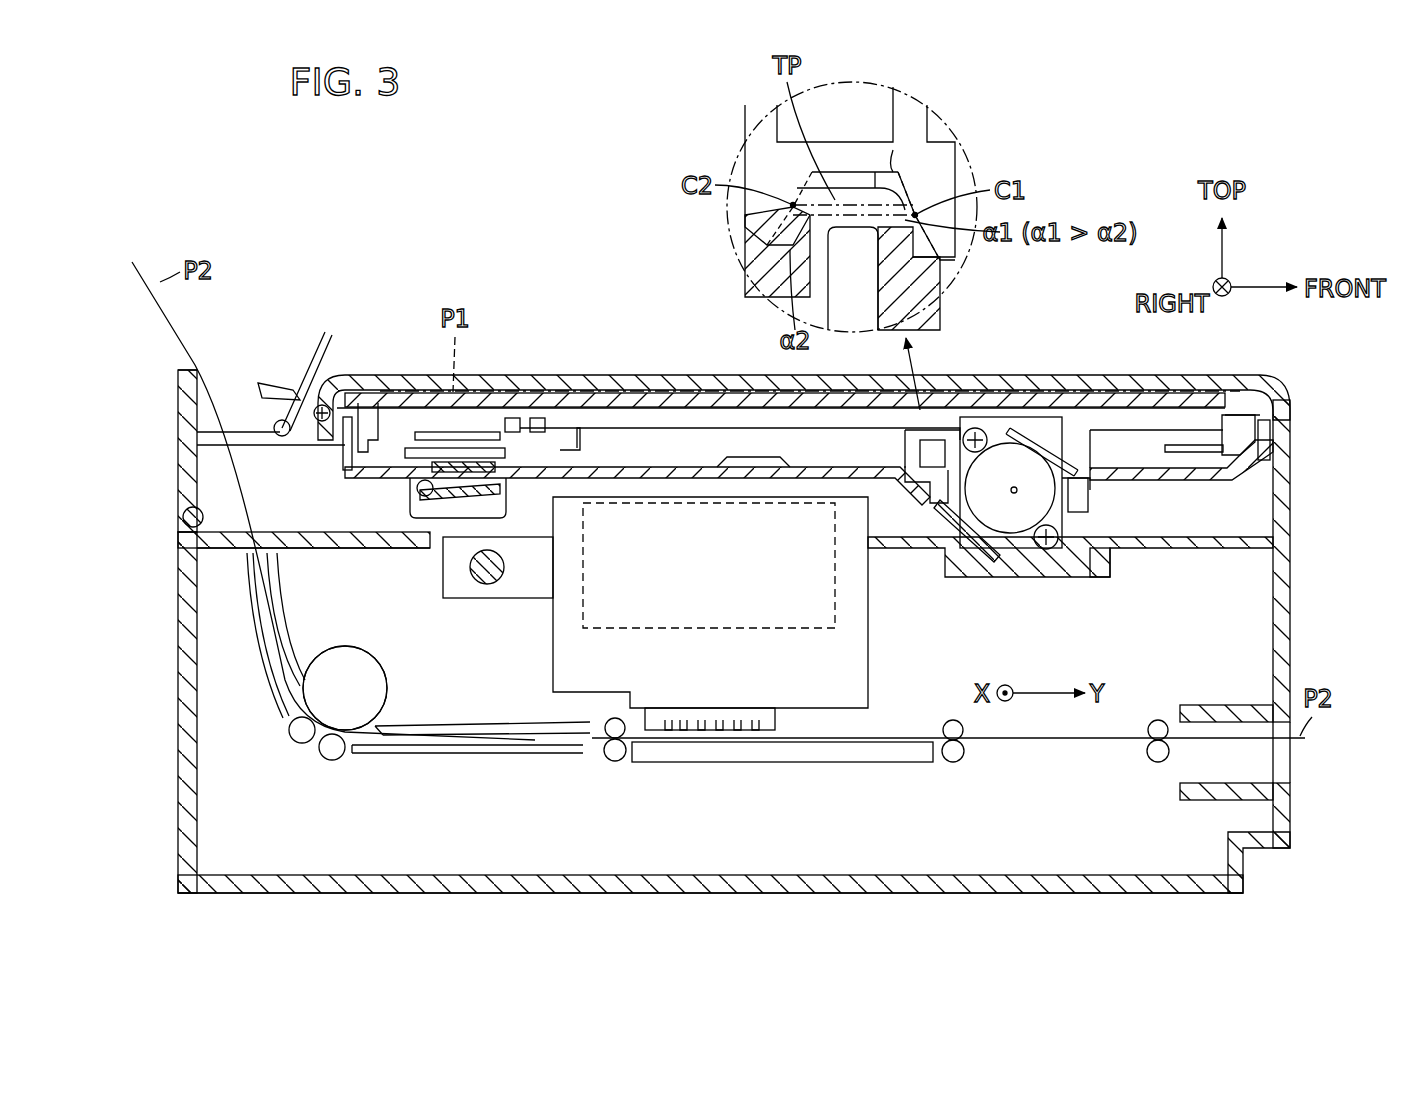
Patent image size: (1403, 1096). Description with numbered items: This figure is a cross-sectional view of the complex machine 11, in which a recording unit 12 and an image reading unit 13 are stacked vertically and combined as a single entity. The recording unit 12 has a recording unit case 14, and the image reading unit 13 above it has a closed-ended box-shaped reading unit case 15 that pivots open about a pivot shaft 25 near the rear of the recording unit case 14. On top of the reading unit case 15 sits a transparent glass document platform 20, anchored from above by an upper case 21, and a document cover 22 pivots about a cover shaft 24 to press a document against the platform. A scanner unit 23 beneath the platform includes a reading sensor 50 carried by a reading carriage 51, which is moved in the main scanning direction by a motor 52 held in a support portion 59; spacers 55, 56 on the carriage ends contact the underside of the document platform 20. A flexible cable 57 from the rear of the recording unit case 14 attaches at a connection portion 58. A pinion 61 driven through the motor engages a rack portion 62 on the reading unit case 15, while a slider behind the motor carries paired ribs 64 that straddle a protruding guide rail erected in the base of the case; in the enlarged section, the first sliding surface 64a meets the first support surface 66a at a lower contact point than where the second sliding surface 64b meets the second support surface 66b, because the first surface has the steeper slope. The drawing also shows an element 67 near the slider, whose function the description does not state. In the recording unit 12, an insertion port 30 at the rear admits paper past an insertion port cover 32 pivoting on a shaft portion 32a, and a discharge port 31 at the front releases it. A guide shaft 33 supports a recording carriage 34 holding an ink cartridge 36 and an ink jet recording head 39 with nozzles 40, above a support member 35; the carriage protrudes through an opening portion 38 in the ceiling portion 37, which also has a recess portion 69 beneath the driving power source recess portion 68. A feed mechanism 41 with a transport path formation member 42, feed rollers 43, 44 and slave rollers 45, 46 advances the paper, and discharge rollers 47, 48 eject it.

The complex machine 11 is at (378, 213).
The recording unit 12 is at (170, 704).
The image reading unit 13 is at (170, 470).
The recording unit case 14 is at (1292, 828).
The reading unit case 15 is at (1250, 470).
The document platform 20 is at (703, 400).
The upper case 21 is at (370, 395).
The document cover 22 is at (548, 376).
The scanner unit 23 is at (1219, 410).
The cover shaft 24 is at (323, 405).
The pivot shaft 25 is at (183, 517).
The insertion port 30 is at (290, 535).
The discharge port 31 is at (1275, 780).
The insertion port cover 32 is at (320, 360).
The shaft portion 32a is at (276, 388).
The guide shaft 33 is at (470, 567).
The recording carriage 34 is at (869, 656).
The support member 35 is at (775, 763).
The ink cartridge 36 is at (717, 632).
The ceiling portion 37 is at (345, 548).
The opening portion 38 is at (880, 549).
The ink jet recording head 39 is at (770, 718).
The nozzles 40 is at (677, 718).
The feed mechanism 41 is at (280, 762).
The transport path formation member 42 is at (298, 684).
The feed roller 43 is at (372, 660).
The feed roller 44 is at (612, 762).
The slave roller 45 is at (333, 760).
The slave roller 46 is at (613, 718).
The discharge roller 47 is at (962, 733).
The discharge roller 48 is at (1149, 733).
The reading sensor 50 is at (588, 426).
The reading carriage 51 is at (642, 445).
The motor 52 is at (1000, 430).
The spacer 55 is at (1262, 432).
The spacer 56 is at (366, 412).
The flexible cable 57 is at (505, 470).
The connection portion 58 is at (515, 418).
The support portion 59 is at (1040, 430).
The pinion 61 is at (1088, 505).
The rack portion 62 is at (1100, 490).
The ribs 64 is at (767, 243).
The first sliding surface 64a is at (930, 165).
The second sliding surface 64b is at (800, 160).
The first support surface 66a is at (905, 208).
The second support surface 66b is at (860, 235).
The pocket 67 is at (418, 492).
The driving power source recess portion 68 is at (990, 552).
The recess portion 69 is at (1095, 550).